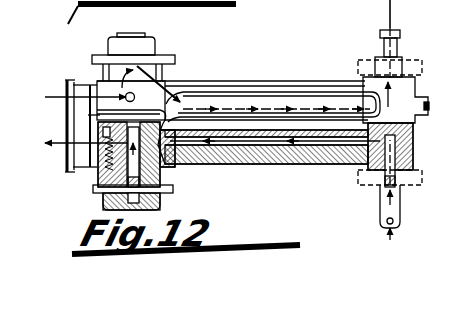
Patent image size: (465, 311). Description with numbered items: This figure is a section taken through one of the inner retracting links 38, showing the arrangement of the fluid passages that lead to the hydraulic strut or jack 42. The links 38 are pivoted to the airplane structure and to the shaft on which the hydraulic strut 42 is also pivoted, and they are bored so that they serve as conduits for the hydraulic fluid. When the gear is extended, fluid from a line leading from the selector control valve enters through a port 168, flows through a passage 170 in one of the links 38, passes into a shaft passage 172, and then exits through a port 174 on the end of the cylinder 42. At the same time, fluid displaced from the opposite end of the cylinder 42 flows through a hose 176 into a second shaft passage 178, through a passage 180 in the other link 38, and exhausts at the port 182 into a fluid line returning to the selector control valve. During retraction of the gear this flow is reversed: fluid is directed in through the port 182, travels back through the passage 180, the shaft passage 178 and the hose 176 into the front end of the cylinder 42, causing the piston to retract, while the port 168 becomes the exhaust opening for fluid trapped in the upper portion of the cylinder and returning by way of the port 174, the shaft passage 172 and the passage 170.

The inner retracting link arm 38 is at (303, 90).
The hydraulic strut 42 is at (80, 113).
The port 168 is at (398, 200).
The passage 170 is at (262, 144).
The shaft passage 172 is at (100, 186).
The port 174 is at (66, 150).
The hose 176 is at (100, 85).
The shaft passage 178 is at (155, 58).
The passage 180 is at (255, 110).
The port 182 is at (400, 48).